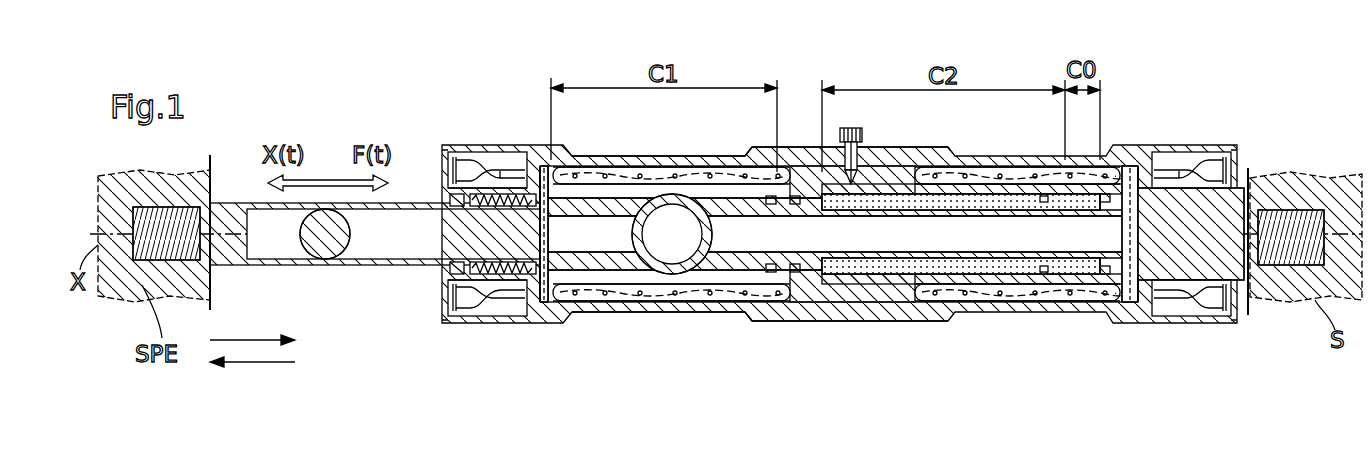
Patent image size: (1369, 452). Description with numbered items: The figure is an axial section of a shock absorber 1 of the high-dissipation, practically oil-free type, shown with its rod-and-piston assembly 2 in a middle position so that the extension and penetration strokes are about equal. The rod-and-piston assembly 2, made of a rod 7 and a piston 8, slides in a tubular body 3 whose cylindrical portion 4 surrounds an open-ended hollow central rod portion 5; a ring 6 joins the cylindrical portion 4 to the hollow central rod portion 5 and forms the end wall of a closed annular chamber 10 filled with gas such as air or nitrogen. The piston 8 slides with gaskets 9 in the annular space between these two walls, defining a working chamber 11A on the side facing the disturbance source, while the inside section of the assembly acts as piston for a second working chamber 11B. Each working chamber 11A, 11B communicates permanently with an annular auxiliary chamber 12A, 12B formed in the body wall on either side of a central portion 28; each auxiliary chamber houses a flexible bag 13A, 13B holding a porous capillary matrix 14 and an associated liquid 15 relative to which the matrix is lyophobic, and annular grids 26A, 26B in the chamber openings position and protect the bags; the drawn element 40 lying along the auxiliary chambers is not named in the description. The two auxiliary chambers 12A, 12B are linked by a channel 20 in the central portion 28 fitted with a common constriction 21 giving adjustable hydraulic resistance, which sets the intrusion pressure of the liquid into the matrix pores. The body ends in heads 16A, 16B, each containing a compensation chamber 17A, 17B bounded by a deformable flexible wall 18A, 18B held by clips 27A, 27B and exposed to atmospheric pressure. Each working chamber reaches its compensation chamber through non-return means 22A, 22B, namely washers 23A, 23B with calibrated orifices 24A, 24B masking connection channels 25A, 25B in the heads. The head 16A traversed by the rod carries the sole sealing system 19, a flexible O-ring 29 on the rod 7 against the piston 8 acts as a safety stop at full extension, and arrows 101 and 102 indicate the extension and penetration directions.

The shock absorber 1 is at (513, 52).
The rod-and-piston assembly 2 is at (343, 270).
The tubular body 3 is at (940, 135).
The cylindrical portion 4 is at (664, 150).
The hollow central rod portion 5 is at (897, 326).
The ring 6 is at (1120, 340).
The rod 7 is at (390, 268).
The piston 8 is at (805, 306).
The gaskets 9 is at (840, 318).
The annular chamber 10 is at (930, 322).
The working chamber 11A is at (633, 308).
The working chamber 11B is at (1140, 320).
The auxiliary chamber 12A is at (573, 320).
The auxiliary chamber 12B is at (1095, 320).
The flexible bag 13A is at (670, 314).
The flexible bag 13B is at (1008, 334).
The porous capillary matrix 14 is at (708, 316).
The associated liquid 15 is at (763, 304).
The head 16A is at (490, 150).
The head 16B is at (1165, 152).
The compensation chamber 17A is at (478, 328).
The compensation chamber 17B is at (1218, 330).
The deformable flexible wall 18A is at (500, 152).
The deformable flexible wall 18B is at (1195, 152).
The sealing system 19 is at (463, 207).
The channel 20 is at (897, 160).
The constriction 21 is at (866, 160).
The non-return means 22A is at (552, 168).
The non-return means 22B is at (1131, 162).
The washer 23A is at (528, 316).
The washer 23B is at (1160, 330).
The calibrated orifice 24A is at (544, 152).
The calibrated orifice 24B is at (1126, 158).
The connection channel 25A is at (538, 150).
The connection channel 25B is at (1185, 320).
The annular grid 26A is at (515, 206).
The annular grid 26B is at (1128, 254).
The clip 27A is at (446, 152).
The clip 27B is at (1240, 312).
The central portion 28 is at (840, 310).
The flexible O-ring 29 is at (762, 158).
The piezo stack 40 is at (975, 306).
The arrow 101 is at (258, 338).
The arrow 102 is at (262, 366).